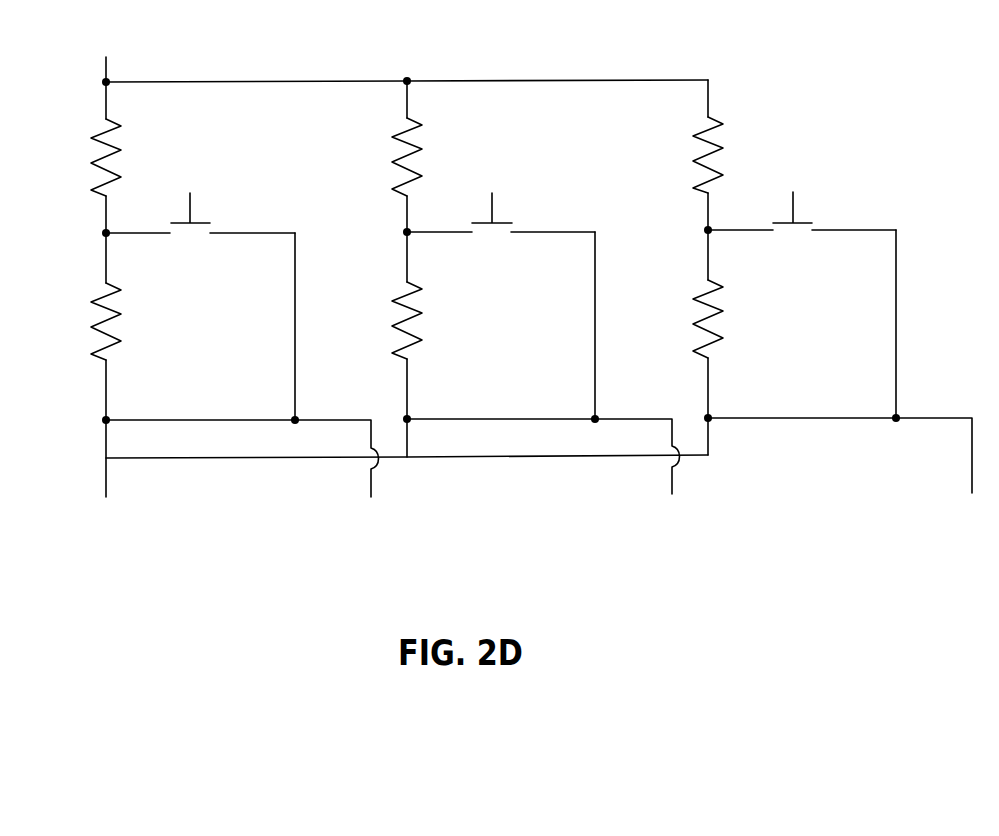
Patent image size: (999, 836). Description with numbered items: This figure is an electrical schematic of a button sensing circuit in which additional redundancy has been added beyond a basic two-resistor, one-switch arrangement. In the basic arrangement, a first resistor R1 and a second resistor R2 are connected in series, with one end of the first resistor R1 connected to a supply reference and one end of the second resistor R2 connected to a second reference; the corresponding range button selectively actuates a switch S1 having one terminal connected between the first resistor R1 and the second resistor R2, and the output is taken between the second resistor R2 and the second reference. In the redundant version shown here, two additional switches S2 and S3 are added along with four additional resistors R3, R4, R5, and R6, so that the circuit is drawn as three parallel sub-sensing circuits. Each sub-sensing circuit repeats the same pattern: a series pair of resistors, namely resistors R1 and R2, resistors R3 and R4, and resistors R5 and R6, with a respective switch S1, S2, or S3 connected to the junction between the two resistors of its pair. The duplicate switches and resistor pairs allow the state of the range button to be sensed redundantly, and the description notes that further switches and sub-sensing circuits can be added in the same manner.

The first resistor R1 is at (86, 157).
The second resistor R2 is at (82, 321).
The additional resistor R3 is at (387, 157).
The additional resistor R4 is at (383, 320).
The additional resistor R5 is at (688, 155).
The additional resistor R6 is at (684, 319).
The switch S1 is at (200, 230).
The additional switch S2 is at (501, 229).
The additional switch S3 is at (802, 228).